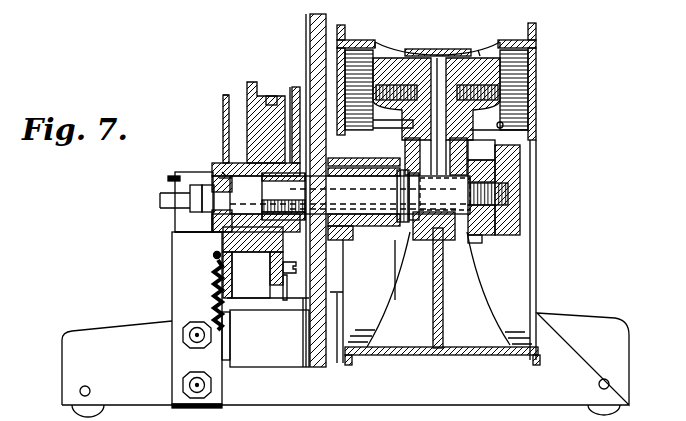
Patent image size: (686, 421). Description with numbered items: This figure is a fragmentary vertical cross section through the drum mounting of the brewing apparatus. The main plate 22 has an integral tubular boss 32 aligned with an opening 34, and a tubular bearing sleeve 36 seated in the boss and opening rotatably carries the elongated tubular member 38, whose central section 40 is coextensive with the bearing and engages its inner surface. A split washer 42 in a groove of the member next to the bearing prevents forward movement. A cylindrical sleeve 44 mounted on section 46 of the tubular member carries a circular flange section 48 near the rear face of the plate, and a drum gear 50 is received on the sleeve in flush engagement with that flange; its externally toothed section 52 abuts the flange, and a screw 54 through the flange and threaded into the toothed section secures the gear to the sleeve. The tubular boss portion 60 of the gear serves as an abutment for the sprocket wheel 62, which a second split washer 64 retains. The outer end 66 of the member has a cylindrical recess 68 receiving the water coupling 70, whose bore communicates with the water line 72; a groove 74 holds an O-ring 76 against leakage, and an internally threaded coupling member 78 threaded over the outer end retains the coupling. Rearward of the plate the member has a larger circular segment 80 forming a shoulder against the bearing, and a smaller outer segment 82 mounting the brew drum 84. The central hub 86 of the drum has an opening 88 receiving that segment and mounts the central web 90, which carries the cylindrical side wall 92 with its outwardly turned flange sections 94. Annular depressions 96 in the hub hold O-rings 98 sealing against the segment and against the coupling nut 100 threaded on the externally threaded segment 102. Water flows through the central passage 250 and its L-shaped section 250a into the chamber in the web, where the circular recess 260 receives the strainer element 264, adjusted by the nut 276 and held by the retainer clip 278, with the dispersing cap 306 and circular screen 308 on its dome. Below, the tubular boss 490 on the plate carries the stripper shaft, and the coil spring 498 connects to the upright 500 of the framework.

The main plate 22 is at (310, 20).
The tubular boss 32 is at (364, 230).
The opening 34 is at (350, 195).
The tubular bearing sleeve 36 is at (364, 159).
The tubular member 38 is at (345, 240).
The central section 40 is at (398, 240).
The split washer 42 is at (397, 156).
The cylindrical sleeve 44 is at (221, 146).
The section 46 is at (212, 247).
The circular flange section 48 is at (296, 105).
The drum gear 50 is at (247, 95).
The externally toothed section 52 is at (272, 95).
The screw 54 is at (283, 268).
The tubular boss portion 60 is at (223, 122).
The sprocket wheel 62 is at (225, 100).
The split washer 64 is at (222, 172).
The outer end 66 is at (213, 226).
The cylindrical recess 68 is at (172, 178).
The water coupling 70 is at (185, 203).
The water line 72 is at (178, 192).
The circumferentially extending groove 74 is at (192, 212).
The O-ring 76 is at (219, 178).
The coupling member 78 is at (197, 320).
The circular segment 80 is at (409, 260).
The outer segment 82 is at (452, 236).
The brew drum 84 is at (544, 48).
The central hub 86 is at (410, 240).
The opening 88 is at (481, 161).
The central web 90 is at (444, 318).
The cylindrical side wall 92 is at (425, 355).
The flange sections 94 is at (349, 358).
The annular depressions 96 is at (425, 202).
The O-rings 98 is at (474, 240).
The coupling nut 100 is at (520, 165).
The externally threaded segment 102 is at (520, 188).
The central passage 250 is at (283, 196).
The L-shaped section 250a is at (390, 196).
The circular recess 260 is at (377, 48).
The strainer element 264 is at (403, 56).
The nut 276 is at (536, 130).
The retainer clip 278 is at (505, 122).
The dispersing cap 306 is at (441, 50).
The circular screen 308 is at (478, 50).
The tubular boss 490 is at (248, 364).
The coil spring 498 is at (214, 290).
The upright 500 is at (177, 325).